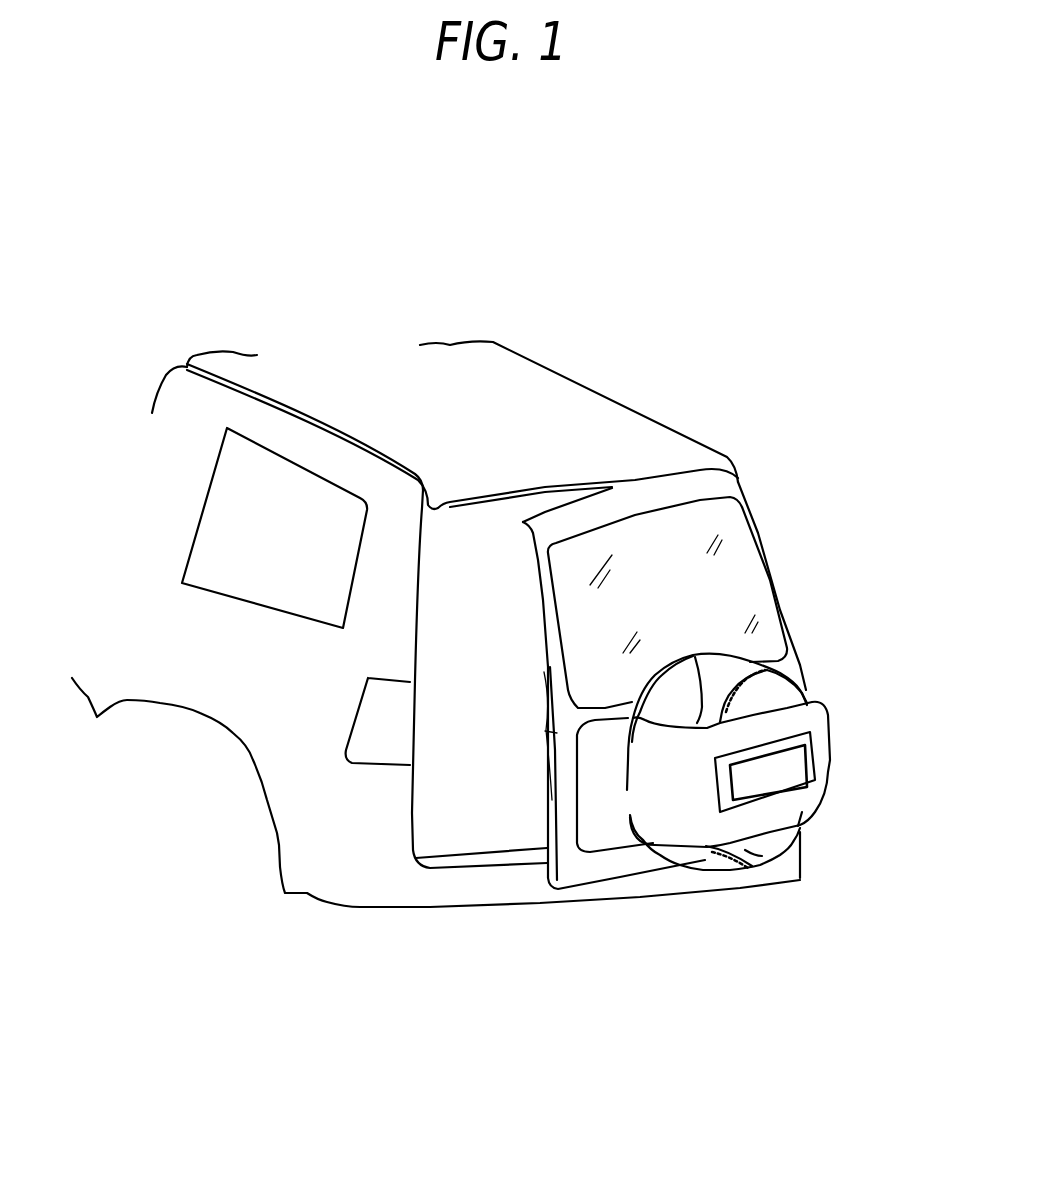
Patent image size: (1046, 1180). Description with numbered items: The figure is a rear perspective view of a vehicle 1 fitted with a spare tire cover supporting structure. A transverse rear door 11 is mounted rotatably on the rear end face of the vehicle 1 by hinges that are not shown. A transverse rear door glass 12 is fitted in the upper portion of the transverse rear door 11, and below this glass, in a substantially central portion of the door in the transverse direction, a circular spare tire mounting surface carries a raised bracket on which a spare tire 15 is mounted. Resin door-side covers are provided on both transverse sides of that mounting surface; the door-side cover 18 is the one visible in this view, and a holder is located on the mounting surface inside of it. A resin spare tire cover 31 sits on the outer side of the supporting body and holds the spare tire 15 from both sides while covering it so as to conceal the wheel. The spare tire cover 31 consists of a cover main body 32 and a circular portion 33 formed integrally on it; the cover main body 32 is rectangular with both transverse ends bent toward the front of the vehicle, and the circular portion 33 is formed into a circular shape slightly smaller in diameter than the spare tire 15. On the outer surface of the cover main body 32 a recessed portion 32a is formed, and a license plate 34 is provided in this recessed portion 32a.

The vehicle 1 is at (570, 343).
The transverse rear door 11 is at (800, 625).
The transverse rear door glass 12 is at (743, 567).
The spare tire 15 is at (702, 857).
The door-side cover 18 is at (595, 835).
The spare tire cover 31 is at (833, 700).
The cover main body 32 is at (830, 753).
The recessed portion 32a is at (785, 793).
The circular portion 33 is at (755, 855).
The license plate 34 is at (797, 822).